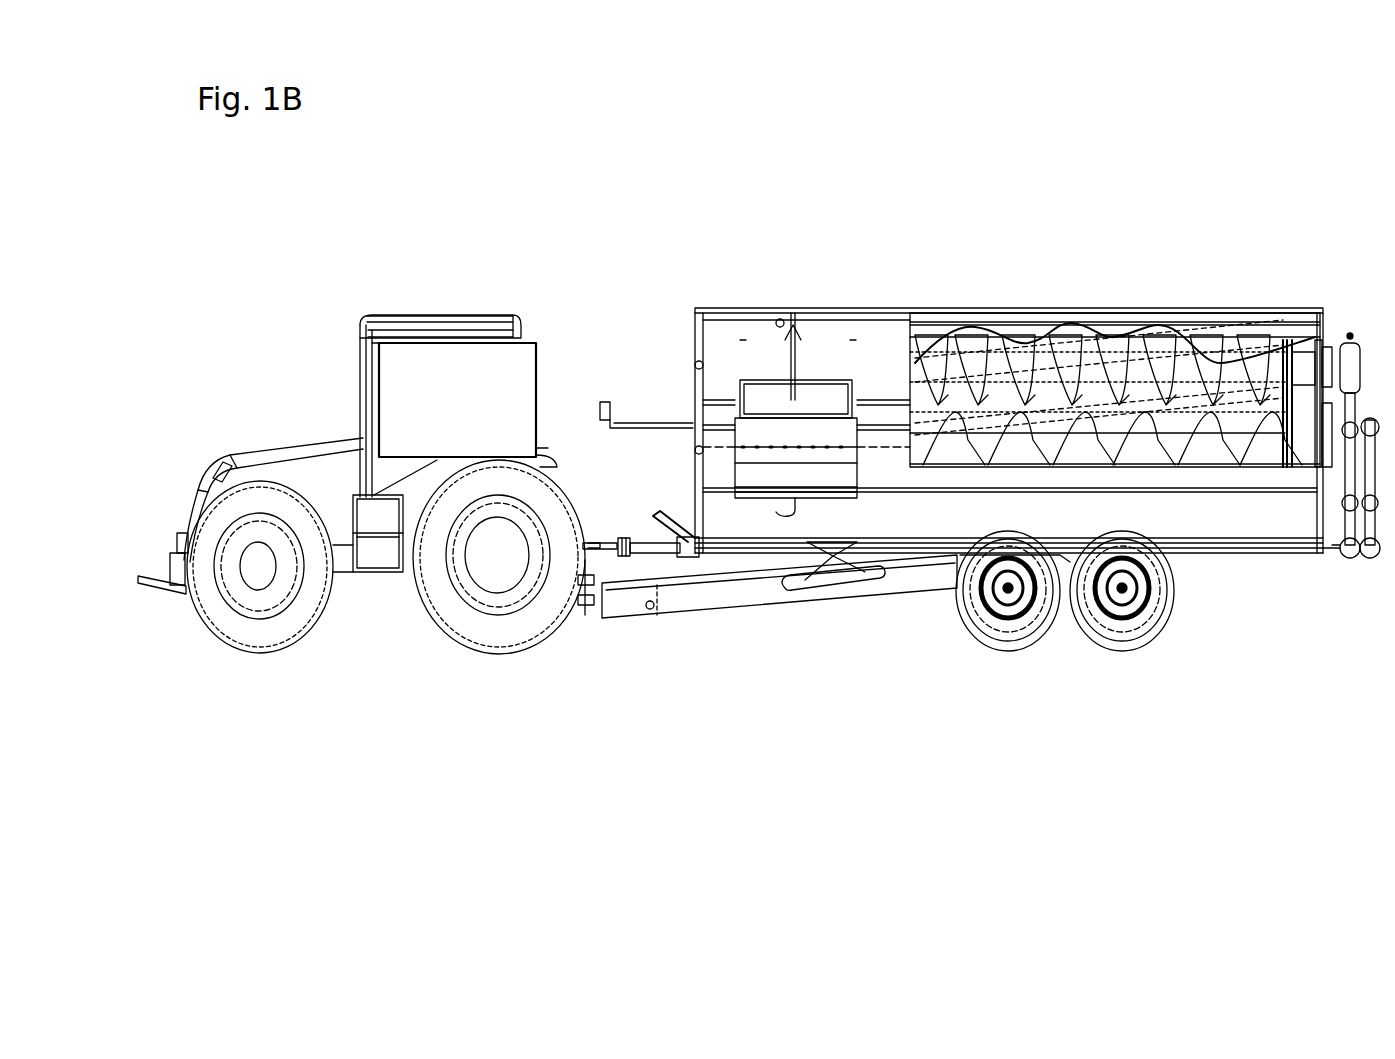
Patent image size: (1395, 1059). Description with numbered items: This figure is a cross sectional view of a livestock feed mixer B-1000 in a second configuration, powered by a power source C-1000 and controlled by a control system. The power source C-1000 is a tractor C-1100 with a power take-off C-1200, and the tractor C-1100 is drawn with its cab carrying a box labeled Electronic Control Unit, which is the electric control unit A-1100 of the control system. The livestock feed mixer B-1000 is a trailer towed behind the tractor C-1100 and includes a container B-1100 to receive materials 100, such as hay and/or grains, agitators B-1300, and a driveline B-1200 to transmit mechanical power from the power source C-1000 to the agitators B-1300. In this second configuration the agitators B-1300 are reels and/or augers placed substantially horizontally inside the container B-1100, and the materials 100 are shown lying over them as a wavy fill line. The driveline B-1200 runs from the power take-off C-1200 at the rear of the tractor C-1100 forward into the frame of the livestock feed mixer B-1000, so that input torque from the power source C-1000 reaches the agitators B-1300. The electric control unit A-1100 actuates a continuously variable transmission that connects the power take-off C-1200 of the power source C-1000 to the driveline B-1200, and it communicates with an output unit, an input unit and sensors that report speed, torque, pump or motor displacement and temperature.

The materials 100 is at (950, 333).
The electric control unit A-1100 is at (437, 345).
The livestock feed mixer B-1000 is at (1068, 281).
The container B-1100 is at (1217, 307).
The driveline B-1200 is at (653, 553).
The agitators B-1300 is at (1027, 362).
The power source C-1000 is at (285, 328).
The tractor C-1100 is at (507, 315).
The power take-off C-1200 is at (598, 552).